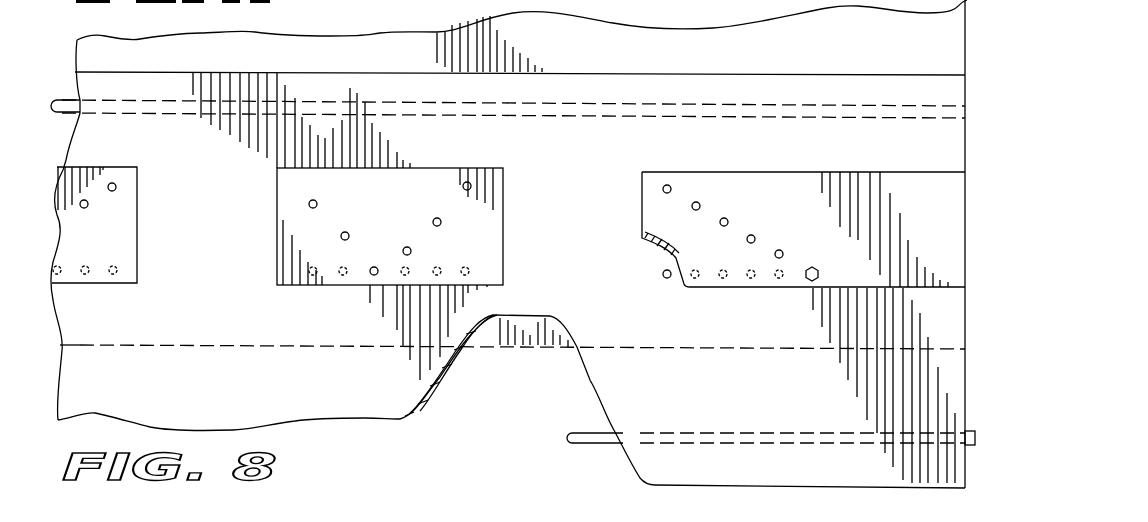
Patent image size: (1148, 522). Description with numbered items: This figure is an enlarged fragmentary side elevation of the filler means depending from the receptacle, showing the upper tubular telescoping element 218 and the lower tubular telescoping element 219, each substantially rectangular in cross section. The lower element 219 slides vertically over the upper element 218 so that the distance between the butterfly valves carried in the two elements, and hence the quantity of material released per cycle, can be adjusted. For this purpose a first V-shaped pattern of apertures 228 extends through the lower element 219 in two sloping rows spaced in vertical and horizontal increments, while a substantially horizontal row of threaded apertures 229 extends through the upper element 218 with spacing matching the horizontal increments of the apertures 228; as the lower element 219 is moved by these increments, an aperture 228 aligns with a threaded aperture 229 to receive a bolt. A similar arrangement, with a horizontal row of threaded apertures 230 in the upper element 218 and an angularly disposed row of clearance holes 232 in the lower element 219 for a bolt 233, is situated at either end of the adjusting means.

The upper tubular telescoping element 218 is at (398, 44).
The lower tubular telescoping element 219 is at (590, 380).
The apertures 228 is at (374, 267).
The threaded apertures 229 is at (438, 266).
The threaded apertures 230 is at (662, 276).
The clearance holes 232 is at (780, 250).
The bolt 233 is at (818, 270).